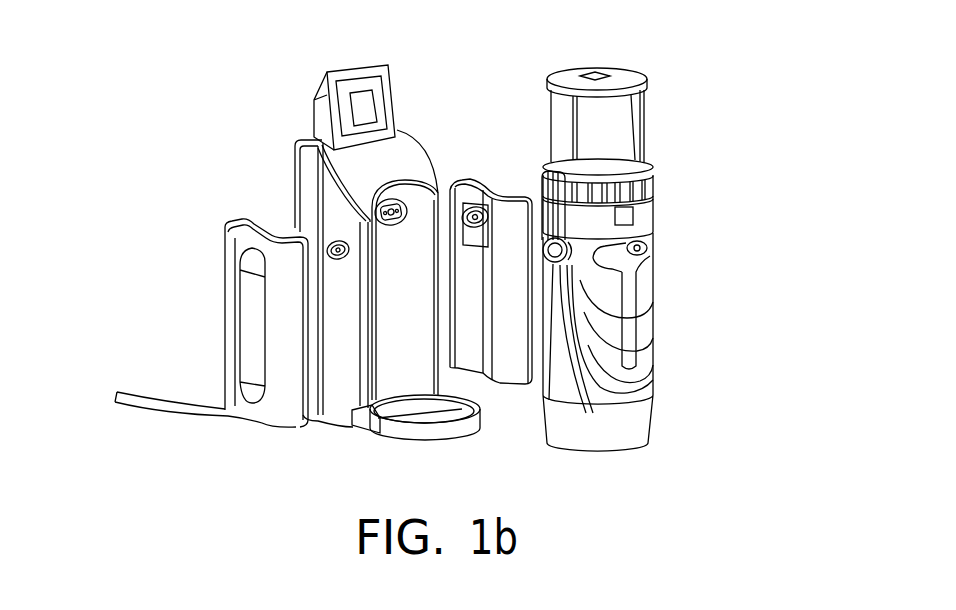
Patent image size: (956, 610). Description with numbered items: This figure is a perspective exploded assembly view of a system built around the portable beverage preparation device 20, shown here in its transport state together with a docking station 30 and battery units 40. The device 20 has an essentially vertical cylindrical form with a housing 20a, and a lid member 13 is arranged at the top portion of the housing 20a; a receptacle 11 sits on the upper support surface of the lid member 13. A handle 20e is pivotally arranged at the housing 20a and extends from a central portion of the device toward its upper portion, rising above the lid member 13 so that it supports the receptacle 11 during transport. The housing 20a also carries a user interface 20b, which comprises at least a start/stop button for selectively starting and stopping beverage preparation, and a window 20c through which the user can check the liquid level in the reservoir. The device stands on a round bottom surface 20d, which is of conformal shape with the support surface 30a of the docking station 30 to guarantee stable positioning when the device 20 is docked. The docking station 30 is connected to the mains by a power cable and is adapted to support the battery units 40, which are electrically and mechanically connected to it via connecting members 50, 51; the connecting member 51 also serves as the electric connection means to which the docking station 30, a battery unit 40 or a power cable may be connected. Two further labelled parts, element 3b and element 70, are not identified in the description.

The display unit 3b is at (326, 81).
The display screen 70 is at (367, 92).
The docking station 30 is at (420, 121).
The support surface 30a is at (452, 413).
The battery unit 40 is at (222, 243).
The connecting member 50 is at (477, 206).
The connecting member 51 is at (335, 242).
The portable beverage preparation device 20 is at (648, 285).
The handle 20e is at (647, 85).
The receptacle 11 is at (622, 128).
The lid member 13 is at (643, 213).
The housing 20a is at (653, 308).
The user interface 20b is at (641, 252).
The window 20c is at (637, 362).
The bottom surface 20d is at (603, 452).